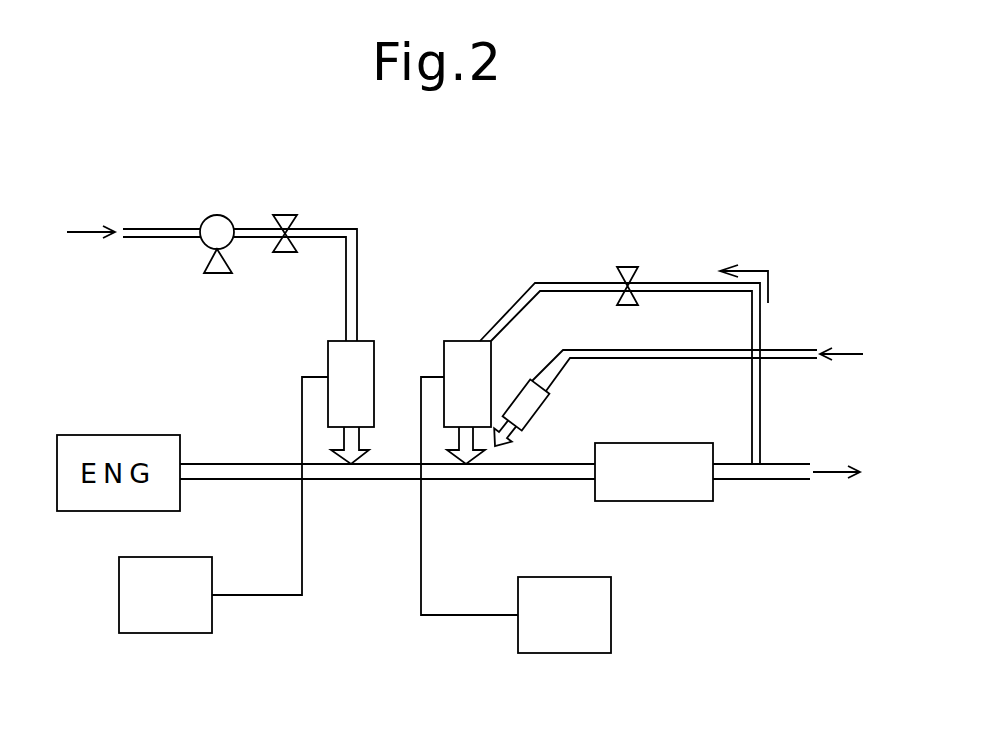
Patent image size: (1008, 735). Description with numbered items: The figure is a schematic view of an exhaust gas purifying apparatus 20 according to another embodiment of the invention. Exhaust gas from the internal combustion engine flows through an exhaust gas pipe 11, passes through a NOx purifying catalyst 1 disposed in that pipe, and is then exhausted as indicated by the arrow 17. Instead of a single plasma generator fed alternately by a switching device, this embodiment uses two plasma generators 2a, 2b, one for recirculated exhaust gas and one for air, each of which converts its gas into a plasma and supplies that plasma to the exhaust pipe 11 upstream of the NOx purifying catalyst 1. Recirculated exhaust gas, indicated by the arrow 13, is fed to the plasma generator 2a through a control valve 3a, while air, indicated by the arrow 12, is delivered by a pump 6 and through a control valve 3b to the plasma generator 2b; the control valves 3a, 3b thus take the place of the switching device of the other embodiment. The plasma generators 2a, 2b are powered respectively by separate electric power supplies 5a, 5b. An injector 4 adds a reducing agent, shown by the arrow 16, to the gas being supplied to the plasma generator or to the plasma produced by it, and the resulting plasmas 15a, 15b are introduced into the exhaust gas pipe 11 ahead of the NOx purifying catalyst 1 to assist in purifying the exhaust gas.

The NOx purifying catalyst 1 is at (667, 502).
The plasma generator 2a is at (462, 341).
The plasma generator 2b is at (333, 341).
The control valve 3a is at (627, 267).
The control valve 3b is at (283, 214).
The injector 4 is at (537, 411).
The electric power supply 5a is at (612, 637).
The electric power supply 5b is at (188, 635).
The pump 6 is at (232, 223).
The exhaust gas pipe 11 is at (227, 463).
The air (arrow) 12 is at (83, 232).
The recirculated exhaust gas (arrow) 13 is at (756, 270).
The plasma 15a is at (481, 455).
The plasma 15b is at (365, 454).
The reducing agent (arrow) 16 is at (842, 350).
The exhausted gas (arrow) 17 is at (833, 476).
The exhaust gas purifying apparatus 20 is at (563, 250).